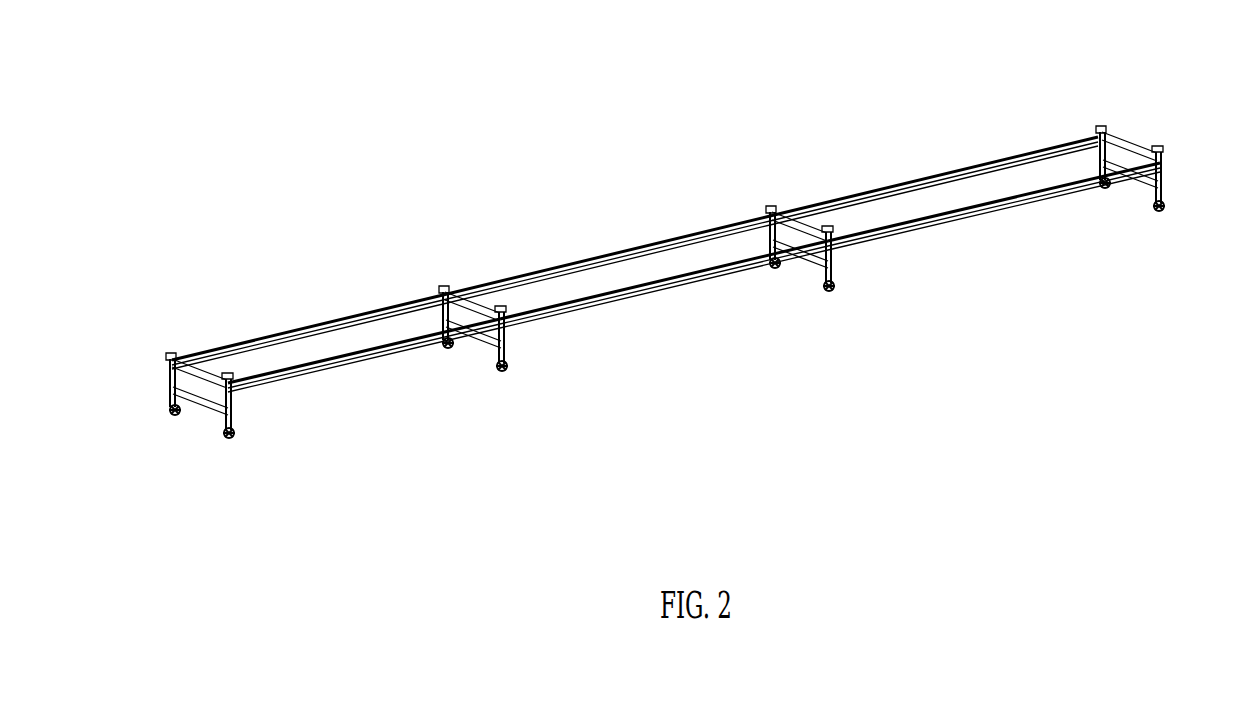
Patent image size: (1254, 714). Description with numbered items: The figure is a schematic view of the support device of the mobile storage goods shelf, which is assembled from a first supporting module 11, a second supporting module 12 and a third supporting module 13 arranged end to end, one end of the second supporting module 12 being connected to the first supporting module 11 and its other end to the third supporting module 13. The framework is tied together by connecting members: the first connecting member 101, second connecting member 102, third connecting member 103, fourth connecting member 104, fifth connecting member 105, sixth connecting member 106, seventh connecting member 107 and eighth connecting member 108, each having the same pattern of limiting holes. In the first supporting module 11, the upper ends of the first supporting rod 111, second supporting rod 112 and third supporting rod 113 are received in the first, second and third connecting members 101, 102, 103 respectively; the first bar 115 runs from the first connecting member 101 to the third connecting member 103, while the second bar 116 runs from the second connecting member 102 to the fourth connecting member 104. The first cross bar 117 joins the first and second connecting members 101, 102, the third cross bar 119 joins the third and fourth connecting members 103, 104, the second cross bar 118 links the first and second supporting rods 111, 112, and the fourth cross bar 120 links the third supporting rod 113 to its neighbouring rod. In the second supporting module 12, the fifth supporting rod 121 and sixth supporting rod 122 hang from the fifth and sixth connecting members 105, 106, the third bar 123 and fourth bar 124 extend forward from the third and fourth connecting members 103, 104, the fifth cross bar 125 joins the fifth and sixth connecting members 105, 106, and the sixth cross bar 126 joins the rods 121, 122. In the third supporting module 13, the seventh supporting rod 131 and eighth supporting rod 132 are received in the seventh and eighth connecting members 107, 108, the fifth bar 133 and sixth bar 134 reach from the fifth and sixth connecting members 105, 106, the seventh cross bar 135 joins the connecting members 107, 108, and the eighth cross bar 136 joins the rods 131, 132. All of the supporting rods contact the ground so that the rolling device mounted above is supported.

The first supporting module 11 is at (300, 389).
The second supporting module 12 is at (653, 279).
The third supporting module 13 is at (1006, 193).
The first connecting member 101 is at (237, 397).
The second connecting member 102 is at (168, 357).
The third connecting member 103 is at (503, 352).
The fourth connecting member 104 is at (443, 297).
The fifth connecting member 105 is at (827, 243).
The sixth connecting member 106 is at (826, 237).
The seventh connecting member 107 is at (1243, 138).
The eighth connecting member 108 is at (1100, 128).
The first supporting rod 111 is at (232, 435).
The second supporting rod 112 is at (170, 387).
The third supporting rod 113 is at (473, 420).
The first bar 115 is at (323, 365).
The second bar 116 is at (222, 362).
The first cross bar 117 is at (201, 360).
The second cross bar 118 is at (178, 408).
The third cross bar 119 is at (466, 300).
The fourth cross bar 120 is at (472, 312).
The fifth supporting rod 121 is at (785, 330).
The sixth supporting rod 122 is at (767, 233).
The third bar 123 is at (647, 337).
The fourth bar 124 is at (598, 239).
The fifth cross bar 125 is at (785, 212).
The sixth cross bar 126 is at (828, 234).
The seventh supporting rod 131 is at (1114, 241).
The eighth supporting rod 132 is at (1095, 142).
The fifth bar 133 is at (1020, 262).
The sixth bar 134 is at (970, 158).
The seventh cross bar 135 is at (1130, 143).
The eighth cross bar 136 is at (1155, 165).